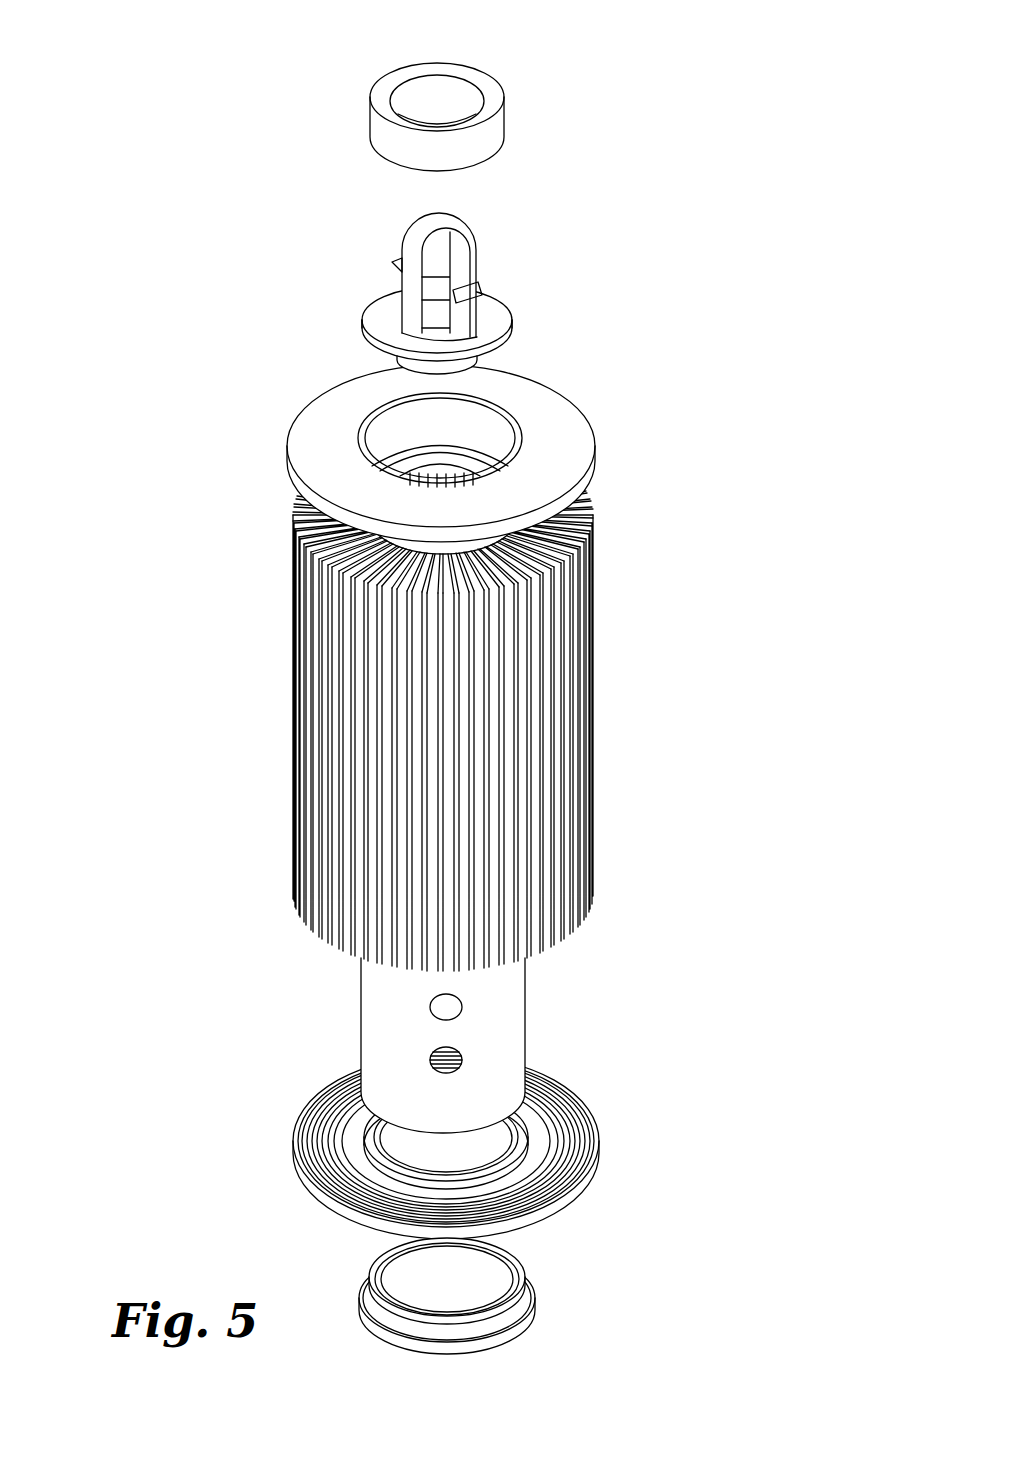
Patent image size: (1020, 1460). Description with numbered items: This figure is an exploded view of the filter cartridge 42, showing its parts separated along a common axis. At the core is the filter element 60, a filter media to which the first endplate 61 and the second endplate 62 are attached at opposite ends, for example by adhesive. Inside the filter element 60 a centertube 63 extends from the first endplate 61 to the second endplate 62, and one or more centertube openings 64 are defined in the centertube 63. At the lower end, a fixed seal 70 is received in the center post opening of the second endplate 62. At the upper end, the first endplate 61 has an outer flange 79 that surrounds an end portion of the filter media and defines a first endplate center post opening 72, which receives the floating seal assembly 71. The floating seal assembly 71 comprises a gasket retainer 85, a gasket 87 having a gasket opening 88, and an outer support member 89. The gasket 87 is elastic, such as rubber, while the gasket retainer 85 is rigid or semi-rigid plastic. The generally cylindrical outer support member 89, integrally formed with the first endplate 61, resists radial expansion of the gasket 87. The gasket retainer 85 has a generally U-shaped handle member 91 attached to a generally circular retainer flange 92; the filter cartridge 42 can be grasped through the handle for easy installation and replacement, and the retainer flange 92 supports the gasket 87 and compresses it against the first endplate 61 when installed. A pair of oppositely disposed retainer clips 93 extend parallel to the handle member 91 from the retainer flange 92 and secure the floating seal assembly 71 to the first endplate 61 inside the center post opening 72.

The filter cartridge 42 is at (676, 55).
The filter element 60 is at (416, 704).
The first endplate 61 is at (416, 437).
The second endplate 62 is at (600, 1137).
The centertube 63 is at (513, 1057).
The centertube opening 64 is at (443, 1017).
The fixed seal 70 is at (362, 1290).
The floating seal assembly 71 is at (545, 55).
The first endplate center post opening 72 is at (422, 463).
The outer flange 79 is at (290, 450).
The gasket retainer 85 is at (442, 272).
The gasket 87 is at (397, 93).
The gasket opening 88 is at (432, 104).
The outer support member 89 is at (392, 560).
The handle member 91 is at (452, 219).
The retainer flange 92 is at (512, 343).
The retainer clips 93 is at (478, 306).